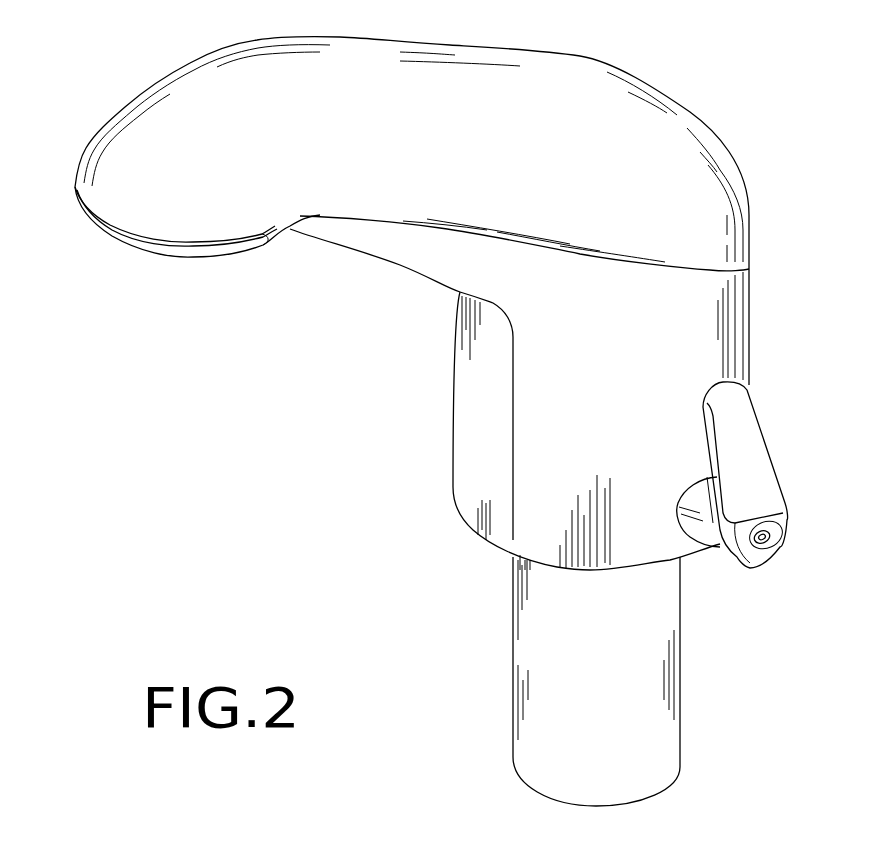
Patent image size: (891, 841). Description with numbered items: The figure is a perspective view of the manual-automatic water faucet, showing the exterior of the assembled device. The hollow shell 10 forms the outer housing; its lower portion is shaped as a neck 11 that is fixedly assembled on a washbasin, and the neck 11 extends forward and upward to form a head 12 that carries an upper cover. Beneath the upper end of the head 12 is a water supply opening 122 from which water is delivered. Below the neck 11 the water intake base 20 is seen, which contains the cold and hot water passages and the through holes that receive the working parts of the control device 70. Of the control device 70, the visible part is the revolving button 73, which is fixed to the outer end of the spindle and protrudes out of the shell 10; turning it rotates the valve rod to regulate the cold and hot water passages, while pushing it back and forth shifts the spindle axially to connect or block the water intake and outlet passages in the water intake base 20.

The shell 10 is at (733, 138).
The neck 11 is at (749, 310).
The head 12 is at (353, 252).
The water supply opening 122 is at (193, 256).
The water intake base 20 is at (695, 736).
The control device 70 is at (778, 471).
The revolving button 73 is at (757, 427).